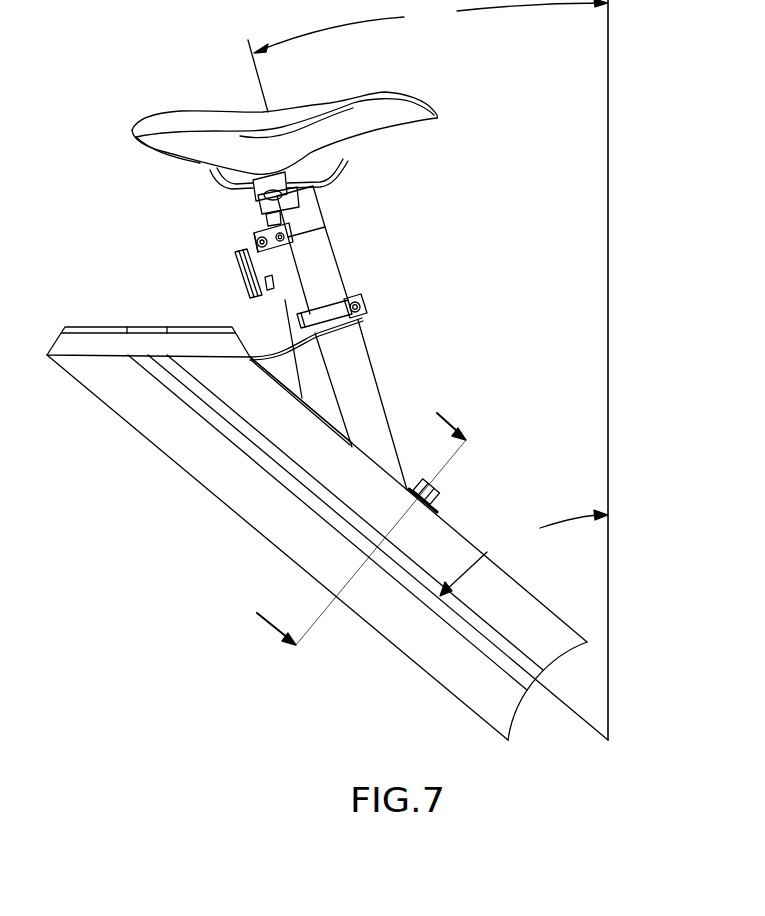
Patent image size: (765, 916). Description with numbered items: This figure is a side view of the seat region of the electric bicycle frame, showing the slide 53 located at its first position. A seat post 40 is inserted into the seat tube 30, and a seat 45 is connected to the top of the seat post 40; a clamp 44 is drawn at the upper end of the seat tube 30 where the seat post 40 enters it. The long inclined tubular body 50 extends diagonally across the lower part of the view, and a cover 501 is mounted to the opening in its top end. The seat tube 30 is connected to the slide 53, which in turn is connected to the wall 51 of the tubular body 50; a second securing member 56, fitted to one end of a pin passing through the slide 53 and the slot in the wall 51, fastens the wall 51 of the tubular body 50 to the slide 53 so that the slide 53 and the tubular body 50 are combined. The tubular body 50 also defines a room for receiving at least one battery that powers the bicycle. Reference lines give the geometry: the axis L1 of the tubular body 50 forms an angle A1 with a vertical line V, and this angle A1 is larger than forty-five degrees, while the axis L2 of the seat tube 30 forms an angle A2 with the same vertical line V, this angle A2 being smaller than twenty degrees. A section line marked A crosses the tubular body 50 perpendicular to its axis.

The seat 45 is at (187, 127).
The seat post 40 is at (322, 268).
The seat post clamp 44 is at (365, 313).
The seat tube 30 is at (365, 381).
The slide 53 is at (302, 357).
The cover 501 is at (123, 343).
The wall 51 is at (158, 434).
The tubular body 50 is at (222, 477).
The second securing member 56 is at (437, 489).
The axis of the tubular body L1 is at (578, 713).
The axis of the seat tube L2 is at (260, 76).
The vertical line V is at (608, 140).
The angle A1 is at (524, 553).
The angle A2 is at (431, 26).
The section line A- A is at (349, 516).